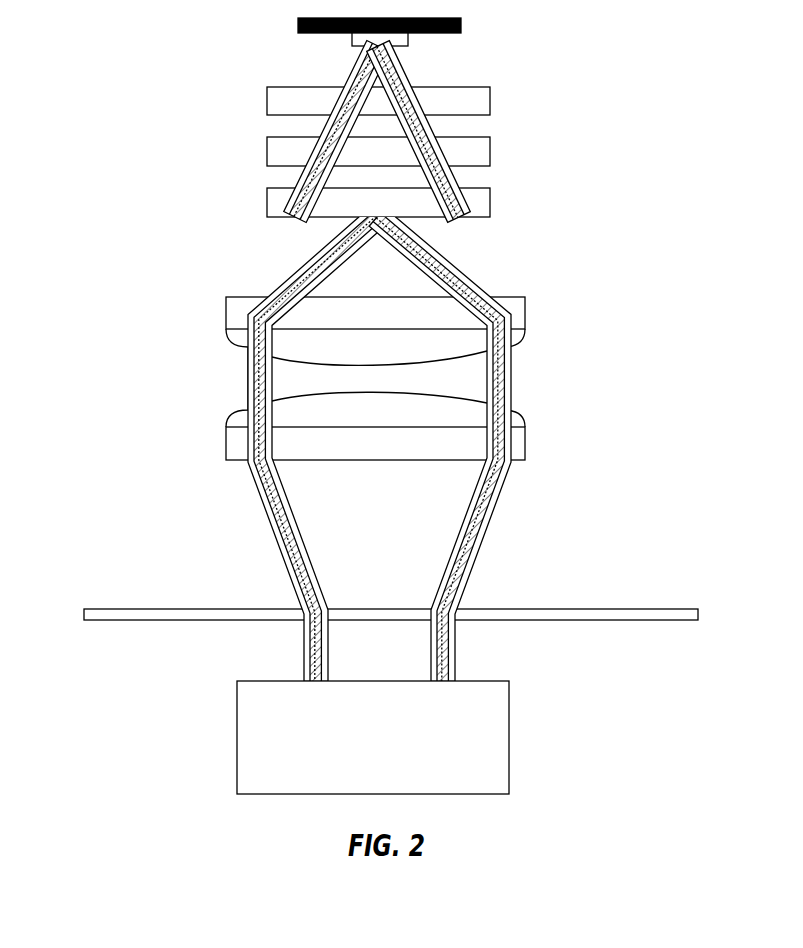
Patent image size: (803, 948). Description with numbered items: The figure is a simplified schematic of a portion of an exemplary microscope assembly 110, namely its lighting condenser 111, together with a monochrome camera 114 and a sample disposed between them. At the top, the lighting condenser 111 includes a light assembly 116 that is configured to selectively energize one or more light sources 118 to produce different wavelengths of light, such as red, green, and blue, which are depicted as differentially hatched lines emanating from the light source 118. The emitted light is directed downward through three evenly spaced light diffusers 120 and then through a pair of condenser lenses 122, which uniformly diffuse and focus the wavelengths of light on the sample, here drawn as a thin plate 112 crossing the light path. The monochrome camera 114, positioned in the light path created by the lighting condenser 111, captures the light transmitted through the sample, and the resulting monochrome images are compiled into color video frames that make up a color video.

The microscope assembly 110 is at (122, 115).
The lighting condenser 111 is at (622, 18).
The sample plate 112 is at (620, 600).
The monochrome camera 114 is at (509, 742).
The light assembly 116 is at (461, 30).
The light source 118 is at (424, 47).
The light diffuser 120 is at (522, 87).
The condenser lens 122 is at (545, 297).